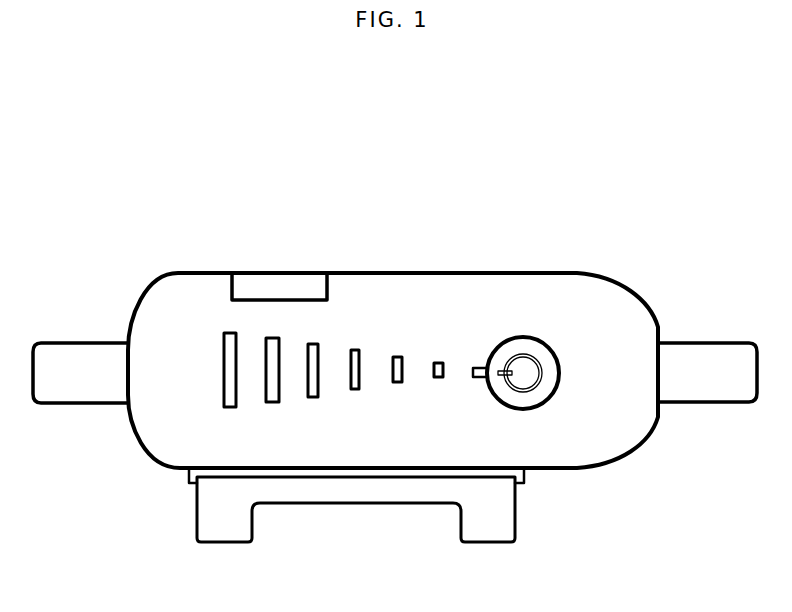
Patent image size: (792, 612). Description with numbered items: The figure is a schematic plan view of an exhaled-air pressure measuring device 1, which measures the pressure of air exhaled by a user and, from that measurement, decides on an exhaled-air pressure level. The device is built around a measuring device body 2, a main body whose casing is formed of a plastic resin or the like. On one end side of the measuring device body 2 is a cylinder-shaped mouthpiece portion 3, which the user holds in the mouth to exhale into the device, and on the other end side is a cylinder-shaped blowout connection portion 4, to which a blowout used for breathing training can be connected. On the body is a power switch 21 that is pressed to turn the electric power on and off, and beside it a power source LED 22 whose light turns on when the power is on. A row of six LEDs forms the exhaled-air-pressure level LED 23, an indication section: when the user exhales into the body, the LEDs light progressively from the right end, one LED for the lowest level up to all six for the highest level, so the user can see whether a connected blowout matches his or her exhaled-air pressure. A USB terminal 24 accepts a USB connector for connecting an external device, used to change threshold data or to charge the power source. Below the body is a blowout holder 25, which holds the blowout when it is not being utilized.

The exhaled-air pressure measuring device 1 is at (345, 228).
The measuring device body 2 is at (457, 273).
The mouthpiece portion 3 is at (716, 343).
The blowout connection portion 4 is at (78, 343).
The power switch 21 is at (557, 392).
The power source LED 22 is at (478, 368).
The exhaled-air-pressure level LED 23 is at (229, 407).
The USB terminal 24 is at (327, 290).
The blowout holder 25 is at (381, 503).